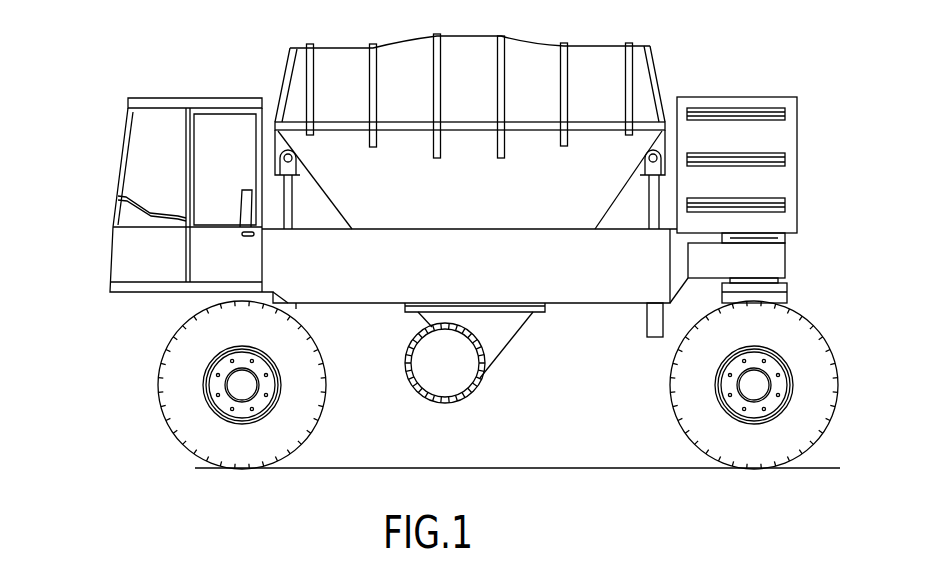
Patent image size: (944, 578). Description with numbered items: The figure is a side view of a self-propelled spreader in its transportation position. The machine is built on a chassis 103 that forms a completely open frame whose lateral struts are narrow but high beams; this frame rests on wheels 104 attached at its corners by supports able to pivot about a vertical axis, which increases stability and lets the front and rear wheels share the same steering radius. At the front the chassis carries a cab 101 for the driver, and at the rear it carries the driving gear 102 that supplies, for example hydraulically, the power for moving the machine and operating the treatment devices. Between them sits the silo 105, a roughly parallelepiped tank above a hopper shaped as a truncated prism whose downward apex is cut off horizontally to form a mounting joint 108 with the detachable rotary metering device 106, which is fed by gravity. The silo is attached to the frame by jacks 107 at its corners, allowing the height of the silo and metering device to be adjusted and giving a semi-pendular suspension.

The cab 101 is at (138, 163).
The driving gear 102 is at (727, 133).
The chassis 103 is at (575, 283).
The wheels 104 is at (817, 430).
The silo 105 is at (593, 55).
The rotary metering device 106 is at (432, 370).
The jacks 107 is at (653, 332).
The mounting joint 108 is at (510, 308).